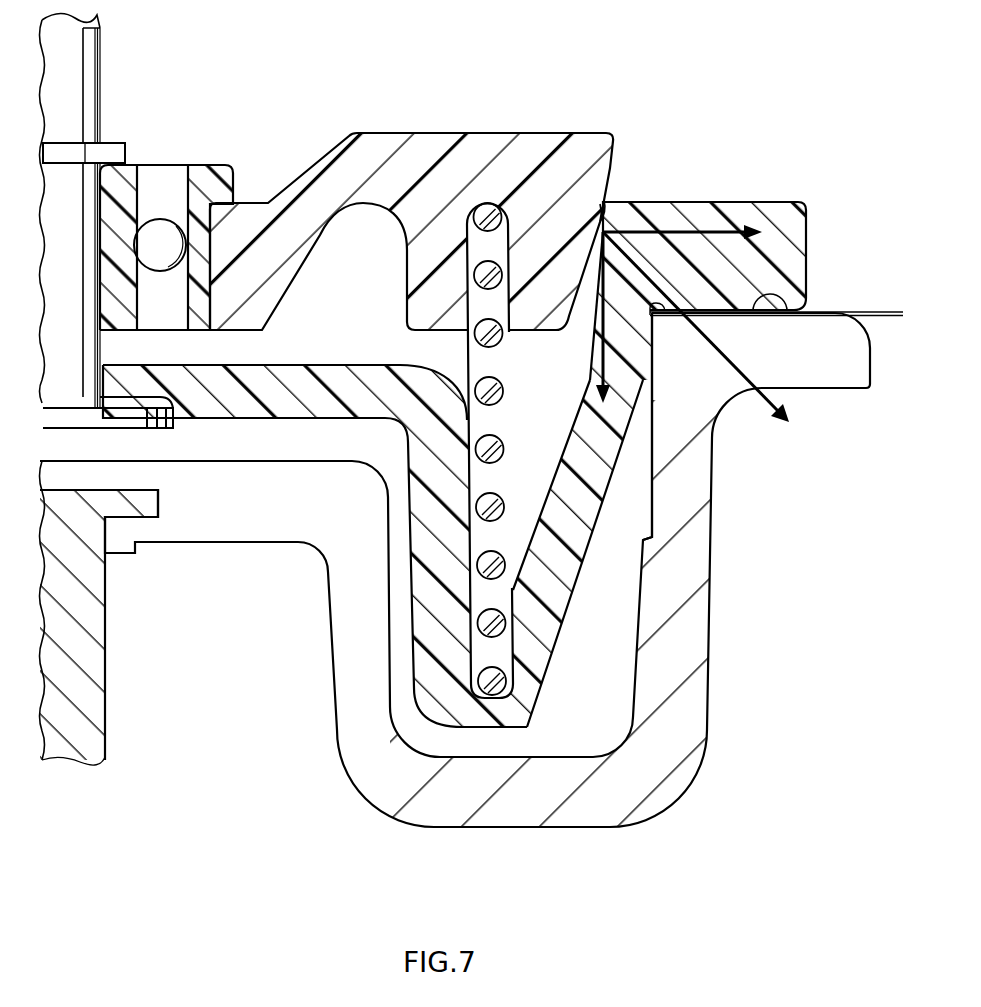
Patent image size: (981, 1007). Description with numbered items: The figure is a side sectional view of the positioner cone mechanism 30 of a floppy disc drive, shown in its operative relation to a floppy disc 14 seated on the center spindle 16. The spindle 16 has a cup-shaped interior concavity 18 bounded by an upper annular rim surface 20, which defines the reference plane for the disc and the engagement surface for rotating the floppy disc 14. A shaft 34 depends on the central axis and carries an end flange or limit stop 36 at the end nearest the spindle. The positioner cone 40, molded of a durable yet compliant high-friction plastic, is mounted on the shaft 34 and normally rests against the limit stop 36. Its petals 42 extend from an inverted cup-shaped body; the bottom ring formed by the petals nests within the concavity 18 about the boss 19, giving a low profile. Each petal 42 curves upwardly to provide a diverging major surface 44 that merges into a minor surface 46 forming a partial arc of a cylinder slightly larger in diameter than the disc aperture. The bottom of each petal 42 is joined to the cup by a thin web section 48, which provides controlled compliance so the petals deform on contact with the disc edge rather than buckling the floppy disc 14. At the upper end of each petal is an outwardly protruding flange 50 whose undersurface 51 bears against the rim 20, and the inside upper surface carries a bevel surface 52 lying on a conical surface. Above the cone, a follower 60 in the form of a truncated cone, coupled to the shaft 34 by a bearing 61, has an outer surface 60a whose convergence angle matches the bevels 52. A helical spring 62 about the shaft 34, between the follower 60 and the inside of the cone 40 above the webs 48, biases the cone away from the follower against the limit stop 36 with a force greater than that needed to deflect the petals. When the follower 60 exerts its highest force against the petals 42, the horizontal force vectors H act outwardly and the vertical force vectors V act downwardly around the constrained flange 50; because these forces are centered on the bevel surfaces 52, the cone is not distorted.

The floppy disc 14 is at (862, 312).
The center spindle 16 is at (750, 545).
The cup-shaped interior concavity 18 is at (652, 495).
The boss 19 is at (203, 518).
The upper annular rim surface 20 is at (818, 388).
The positioner cone mechanism 30 is at (438, 198).
The shaft 34 is at (80, 75).
The limit stop 36 is at (101, 416).
The positioner cone 40 is at (558, 410).
The petals 42 is at (476, 471).
The diverging major surface 44 is at (587, 548).
The minor surface 46 is at (628, 372).
The thin web section 48 is at (506, 707).
The outwardly protruding flange 50 is at (807, 247).
The undersurface 51 is at (712, 316).
The bevel surface 52 is at (603, 195).
The follower 60 is at (540, 133).
The outer surface 60a is at (615, 160).
The bearing 61 is at (205, 167).
The helical spring 62 is at (496, 505).
The horizontal force vectors H is at (665, 228).
The vertical force vectors V is at (600, 340).